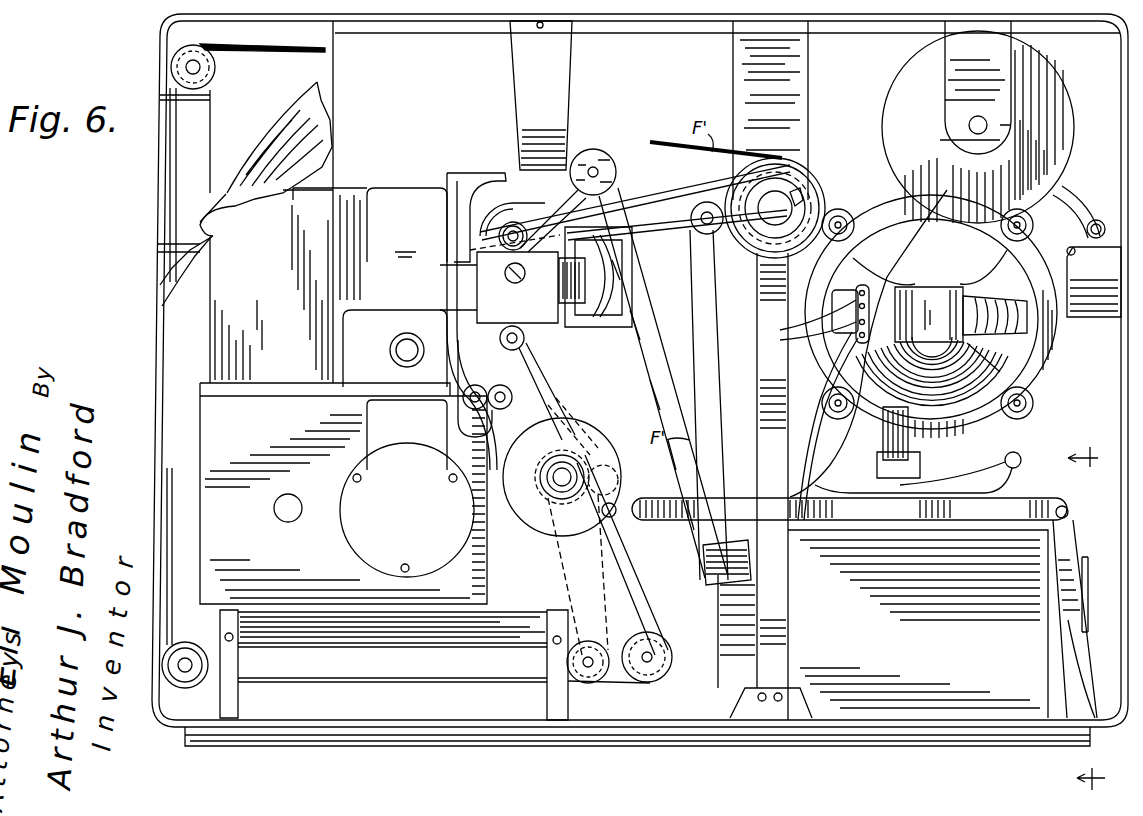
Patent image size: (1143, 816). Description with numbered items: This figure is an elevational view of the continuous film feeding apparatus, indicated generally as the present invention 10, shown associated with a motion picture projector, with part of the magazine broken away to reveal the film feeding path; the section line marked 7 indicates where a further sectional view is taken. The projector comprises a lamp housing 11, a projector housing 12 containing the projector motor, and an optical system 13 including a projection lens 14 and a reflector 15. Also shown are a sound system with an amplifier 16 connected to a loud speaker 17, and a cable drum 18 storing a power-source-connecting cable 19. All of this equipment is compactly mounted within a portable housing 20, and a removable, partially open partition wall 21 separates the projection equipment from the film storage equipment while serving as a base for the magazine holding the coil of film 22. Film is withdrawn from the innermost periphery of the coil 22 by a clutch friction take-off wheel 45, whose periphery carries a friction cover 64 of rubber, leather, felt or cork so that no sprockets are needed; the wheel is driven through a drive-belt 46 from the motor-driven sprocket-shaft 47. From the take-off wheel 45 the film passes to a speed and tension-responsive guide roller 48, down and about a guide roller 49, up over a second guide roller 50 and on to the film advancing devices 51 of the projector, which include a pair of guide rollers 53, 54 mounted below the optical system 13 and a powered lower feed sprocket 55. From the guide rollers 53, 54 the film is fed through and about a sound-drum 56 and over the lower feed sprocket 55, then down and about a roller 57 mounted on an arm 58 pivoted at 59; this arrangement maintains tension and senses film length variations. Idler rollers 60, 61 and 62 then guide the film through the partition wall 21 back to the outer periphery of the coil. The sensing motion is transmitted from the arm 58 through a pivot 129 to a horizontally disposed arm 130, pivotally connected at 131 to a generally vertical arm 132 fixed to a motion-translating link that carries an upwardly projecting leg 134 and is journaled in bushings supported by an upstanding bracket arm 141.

The present invention 10 is at (677, 87).
The lamp housing 11 is at (378, 198).
The projector housing 12 is at (345, 520).
The optical system 13 is at (594, 330).
The projection lens 14 is at (560, 326).
The reflector 15 is at (630, 328).
The amplifier 16 is at (1043, 545).
The loud speaker 17 is at (1038, 362).
The cable drum 18 is at (1064, 108).
The power-source-connecting cable 19 is at (1070, 198).
The portable housing 20 is at (1118, 680).
The partition wall 21 is at (172, 46).
The coil of film 22 is at (272, 132).
The take-off wheel 45 is at (724, 186).
The drive-belt 46 is at (652, 200).
The sprocket-shaft 47 is at (517, 223).
The guide roller 48 is at (708, 238).
The guide roller 49 is at (706, 570).
The second guide roller 50 is at (598, 160).
The film advancing devices 51 is at (552, 368).
The guide roller 53 is at (476, 412).
The guide roller 54 is at (503, 410).
The lower feed sprocket 55 is at (504, 340).
The sound-drum 56 is at (600, 448).
The roller 57 is at (674, 672).
The arm 58 is at (640, 558).
The pivot 59 is at (615, 478).
The idler roller 60 is at (588, 685).
The idler roller 61 is at (182, 682).
The idler roller 62 is at (184, 67).
The friction cover 64 is at (818, 180).
The pivotal attachment 129 is at (617, 506).
The horizontally disposed arm 130 is at (1020, 463).
The pivotal connection 131 is at (1070, 505).
The vertically disposed arm 132 is at (1075, 552).
The upwardly projecting leg 134 is at (1085, 568).
The bracket arm 141 is at (1085, 670).
The section line 7- 7 is at (1086, 620).